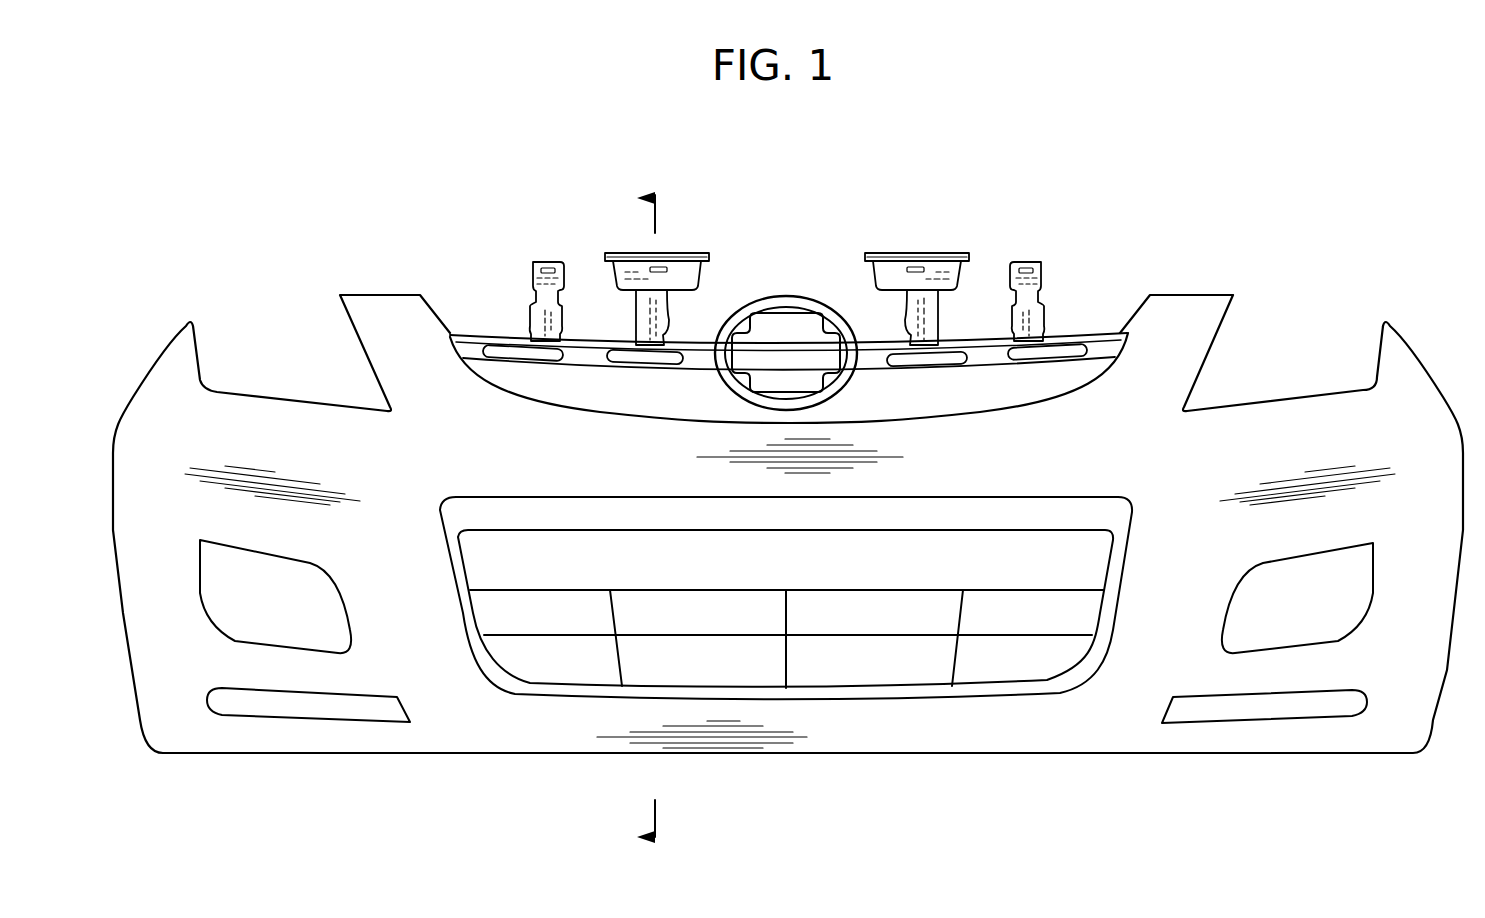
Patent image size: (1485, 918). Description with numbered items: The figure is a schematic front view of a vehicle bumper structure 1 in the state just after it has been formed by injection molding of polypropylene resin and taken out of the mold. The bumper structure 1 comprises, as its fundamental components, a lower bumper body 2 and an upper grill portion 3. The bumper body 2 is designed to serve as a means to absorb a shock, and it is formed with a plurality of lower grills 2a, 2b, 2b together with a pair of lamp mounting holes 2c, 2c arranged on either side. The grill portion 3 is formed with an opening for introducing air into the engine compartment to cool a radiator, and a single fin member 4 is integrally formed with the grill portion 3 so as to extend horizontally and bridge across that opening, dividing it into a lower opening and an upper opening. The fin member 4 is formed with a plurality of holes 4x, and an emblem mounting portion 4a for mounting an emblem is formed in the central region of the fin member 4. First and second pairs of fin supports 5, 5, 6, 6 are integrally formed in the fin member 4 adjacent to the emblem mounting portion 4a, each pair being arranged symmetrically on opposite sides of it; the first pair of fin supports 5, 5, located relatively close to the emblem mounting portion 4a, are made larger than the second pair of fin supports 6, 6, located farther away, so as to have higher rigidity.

The vehicle bumper structure 1 is at (190, 238).
The lower bumper body 2 is at (1041, 764).
The lower grill 2a is at (548, 667).
The lower grill 2b is at (298, 708).
The lamp mounting hole 2c is at (243, 626).
The upper grill portion 3 is at (1154, 290).
The fin member 4 is at (467, 328).
The emblem mounting portion 4a is at (762, 303).
The hole 4x is at (530, 354).
The first pair of fin supports 5 is at (704, 254).
The second pair of fin supports 6 is at (566, 261).